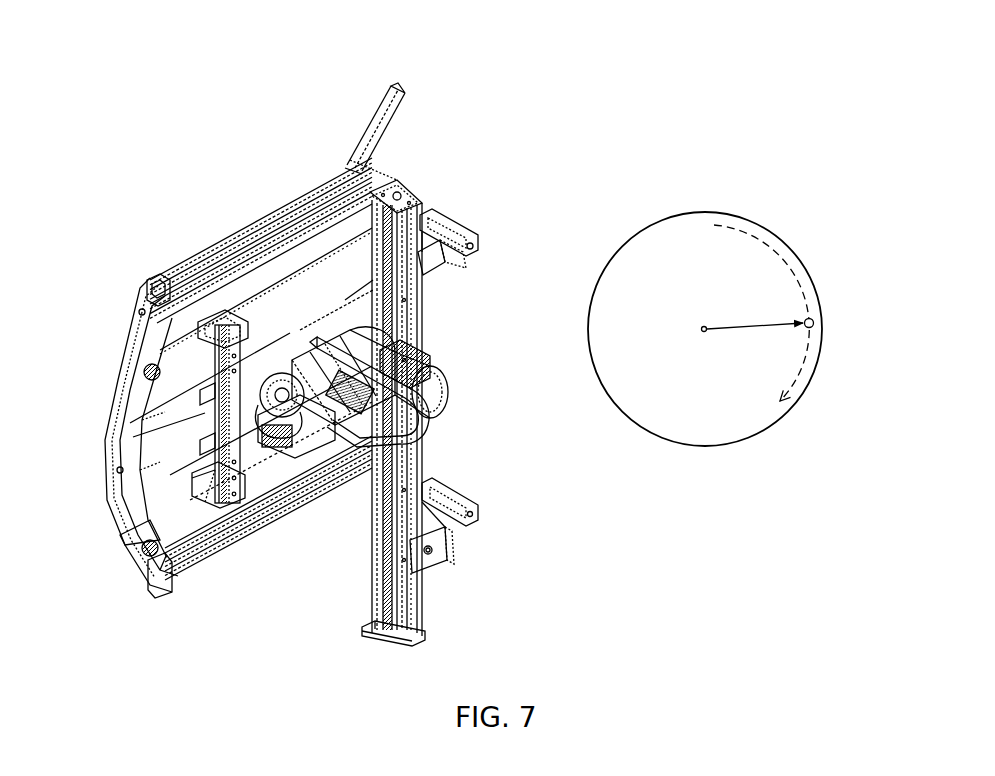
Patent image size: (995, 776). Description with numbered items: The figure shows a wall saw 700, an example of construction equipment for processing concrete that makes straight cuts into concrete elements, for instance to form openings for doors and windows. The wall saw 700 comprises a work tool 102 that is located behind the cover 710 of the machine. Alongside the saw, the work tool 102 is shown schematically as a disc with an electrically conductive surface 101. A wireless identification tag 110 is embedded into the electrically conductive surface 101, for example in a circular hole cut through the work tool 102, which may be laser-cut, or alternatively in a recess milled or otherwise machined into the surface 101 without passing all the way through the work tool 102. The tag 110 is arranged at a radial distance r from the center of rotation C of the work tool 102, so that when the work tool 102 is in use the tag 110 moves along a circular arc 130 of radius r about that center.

The wall saw 700 is at (98, 148).
The cover 710 is at (265, 240).
The work tool 102 is at (790, 410).
The electrically conductive surface 101 is at (736, 381).
The circular arc 130 is at (753, 238).
The wireless identification tag 110 is at (815, 323).